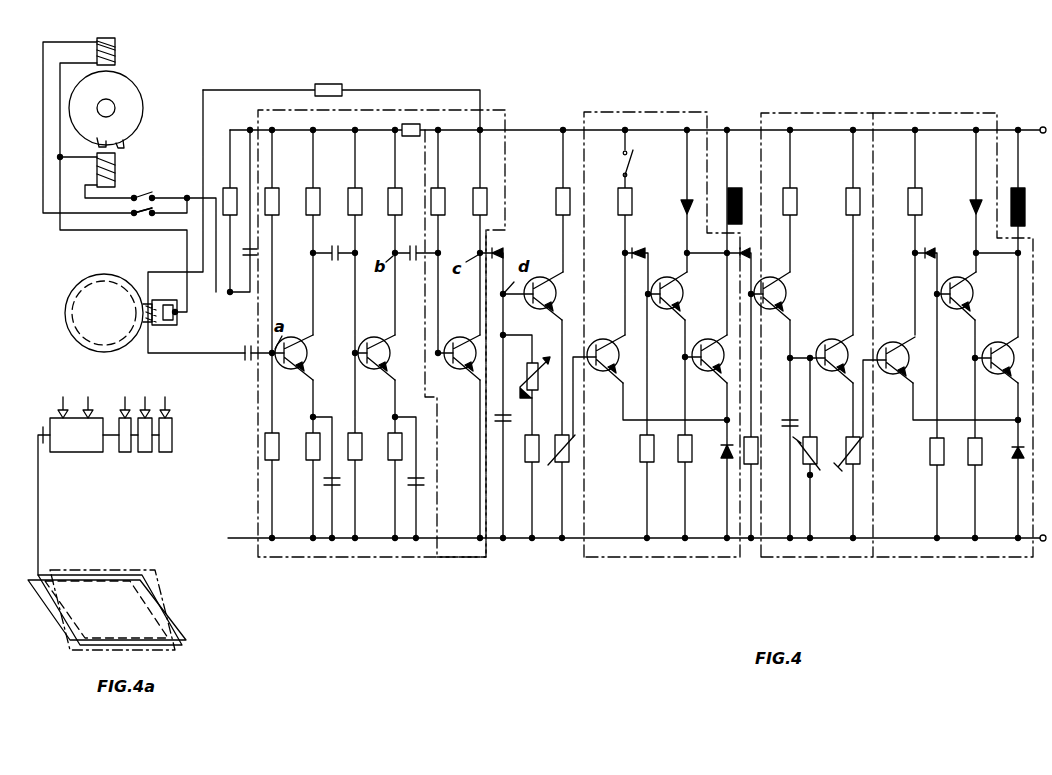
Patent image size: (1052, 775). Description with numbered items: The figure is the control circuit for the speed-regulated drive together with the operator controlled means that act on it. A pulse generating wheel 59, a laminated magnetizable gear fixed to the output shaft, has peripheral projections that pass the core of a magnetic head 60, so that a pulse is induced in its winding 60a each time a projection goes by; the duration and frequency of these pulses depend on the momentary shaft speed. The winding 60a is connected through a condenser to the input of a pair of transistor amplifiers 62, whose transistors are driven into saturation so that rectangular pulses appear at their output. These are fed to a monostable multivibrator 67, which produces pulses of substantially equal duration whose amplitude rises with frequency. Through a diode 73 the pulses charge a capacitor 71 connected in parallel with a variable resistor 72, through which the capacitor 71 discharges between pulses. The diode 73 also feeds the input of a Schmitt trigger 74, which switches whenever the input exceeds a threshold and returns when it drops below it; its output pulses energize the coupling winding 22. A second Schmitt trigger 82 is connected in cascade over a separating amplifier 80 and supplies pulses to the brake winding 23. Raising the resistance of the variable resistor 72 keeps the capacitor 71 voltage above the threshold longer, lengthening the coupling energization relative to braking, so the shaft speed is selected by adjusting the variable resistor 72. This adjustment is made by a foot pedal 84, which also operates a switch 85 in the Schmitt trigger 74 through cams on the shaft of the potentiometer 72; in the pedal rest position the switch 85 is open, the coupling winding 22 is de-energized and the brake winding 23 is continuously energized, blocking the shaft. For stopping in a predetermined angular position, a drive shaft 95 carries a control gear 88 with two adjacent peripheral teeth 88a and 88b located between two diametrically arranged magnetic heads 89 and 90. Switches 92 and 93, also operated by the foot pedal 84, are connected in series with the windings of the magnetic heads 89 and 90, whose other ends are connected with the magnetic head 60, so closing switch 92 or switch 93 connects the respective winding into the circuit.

In FIG. 4, the coupling winding 22 is at (736, 186).
In FIG. 4, the brake winding 23 is at (1022, 188).
In FIG. 4a, the pulse generating wheel 59 is at (108, 338).
In FIG. 4a, the magnetic head 60 is at (168, 320).
In FIG. 4a, the winding of magnetic head 60a is at (156, 305).
In FIG. 4, the transistor amplifiers 62 is at (343, 560).
In FIG. 4, the monostable multivibrator 67 is at (480, 566).
In FIG. 4, the capacitor 71 is at (497, 420).
In FIG. 4a, the variable resistor 72 is at (78, 452).
In FIG. 4, the variable resistor 72 is at (524, 372).
In FIG. 4, the diode 73 is at (500, 252).
In FIG. 4, the Schmitt trigger 74 is at (636, 558).
In FIG. 4, the separating amplifier 80 is at (806, 558).
In FIG. 4, the second Schmitt trigger 82 is at (953, 558).
In FIG. 4a, the foot pedal 84 is at (127, 600).
In FIG. 4a, the switch 85 is at (128, 455).
In FIG. 4, the switch 85 is at (640, 167).
In FIG. 4a, the control gear 88 is at (121, 98).
In FIG. 4a, the peripheral tooth 88a is at (98, 133).
In FIG. 4a, the peripheral tooth 88b is at (125, 142).
In FIG. 4a, the magnetic head 89 is at (113, 157).
In FIG. 4a, the magnetic head 90 is at (117, 57).
In FIG. 4a, the switch 92 is at (145, 395).
In FIG. 4a, the switch 93 is at (166, 455).
In FIG. 4a, the drive shaft 95 is at (99, 105).